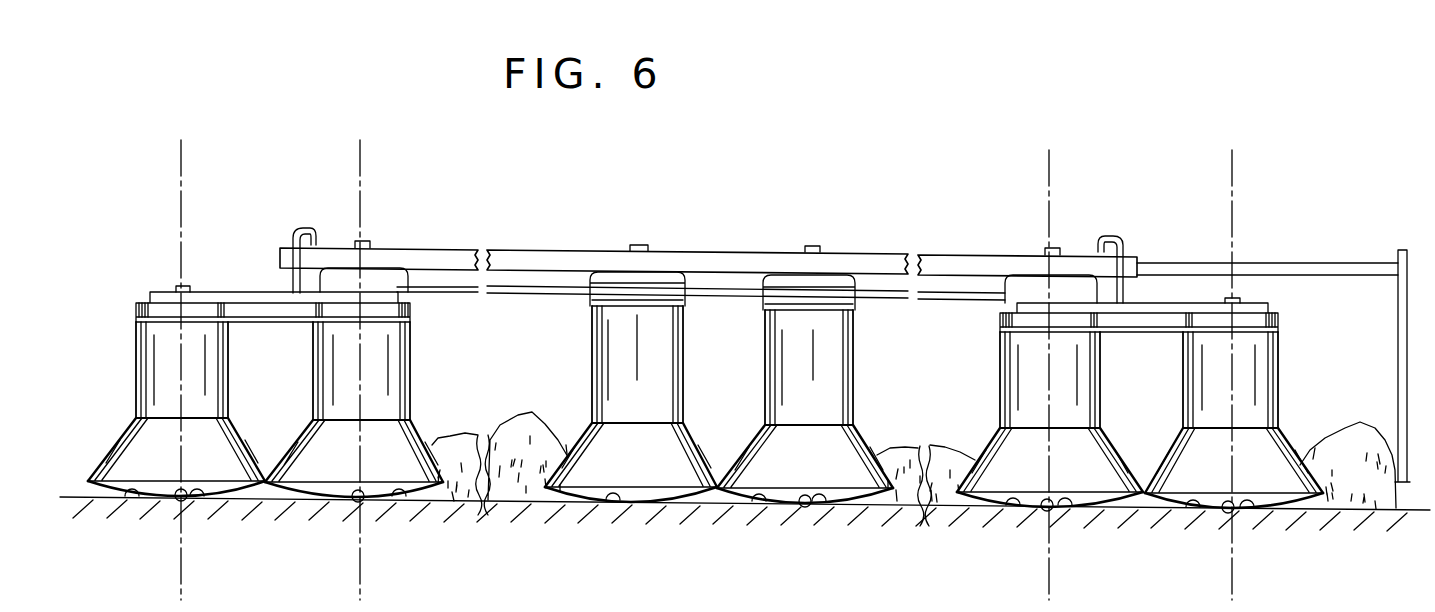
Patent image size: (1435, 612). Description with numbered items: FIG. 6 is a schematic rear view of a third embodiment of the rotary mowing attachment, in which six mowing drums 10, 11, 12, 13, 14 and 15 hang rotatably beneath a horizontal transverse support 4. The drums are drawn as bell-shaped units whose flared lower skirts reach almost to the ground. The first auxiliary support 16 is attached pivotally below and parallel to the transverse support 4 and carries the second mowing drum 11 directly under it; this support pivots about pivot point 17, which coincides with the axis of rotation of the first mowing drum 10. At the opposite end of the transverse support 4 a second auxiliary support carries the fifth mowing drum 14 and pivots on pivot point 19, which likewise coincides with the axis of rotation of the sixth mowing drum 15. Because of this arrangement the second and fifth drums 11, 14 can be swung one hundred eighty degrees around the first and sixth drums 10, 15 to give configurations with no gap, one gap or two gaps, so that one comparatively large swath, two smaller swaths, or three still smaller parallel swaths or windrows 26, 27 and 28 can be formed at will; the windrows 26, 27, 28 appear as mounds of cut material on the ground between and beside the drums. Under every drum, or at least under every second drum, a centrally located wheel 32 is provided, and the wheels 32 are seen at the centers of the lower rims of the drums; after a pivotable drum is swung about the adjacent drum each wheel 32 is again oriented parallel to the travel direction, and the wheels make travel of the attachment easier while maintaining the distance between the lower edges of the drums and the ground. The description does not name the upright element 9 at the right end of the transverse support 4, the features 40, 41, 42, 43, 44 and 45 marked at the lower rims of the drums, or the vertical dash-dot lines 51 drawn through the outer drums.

The transverse support 4 is at (450, 262).
The vertical post 9 is at (1398, 305).
The first mowing drum 10 is at (322, 460).
The second mowing drum 11 is at (225, 470).
The mowing drum 12 is at (652, 468).
The mowing drum 13 is at (843, 470).
The fifth mowing drum 14 is at (1300, 470).
The sixth mowing drum 15 is at (1105, 470).
The first auxiliary support 16 is at (250, 303).
The pivot point 17 is at (370, 246).
The pivot point 19 is at (1046, 250).
The windrow 26 is at (1352, 422).
The windrow 27 is at (912, 447).
The windrow 28 is at (516, 428).
The wheel 32 is at (203, 500).
The cup lip 40 is at (140, 497).
The cup lip 41 is at (418, 500).
The cup lip 42 is at (605, 500).
The cup lip 43 is at (763, 500).
The cup lip 44 is at (1196, 506).
The cup lip 45 is at (1013, 505).
The center axis 51 is at (181, 188).